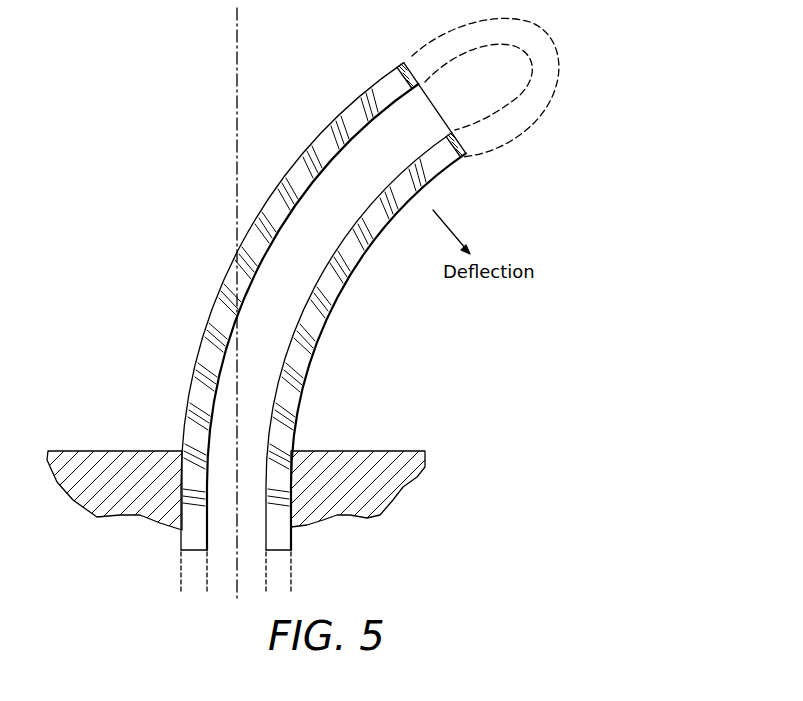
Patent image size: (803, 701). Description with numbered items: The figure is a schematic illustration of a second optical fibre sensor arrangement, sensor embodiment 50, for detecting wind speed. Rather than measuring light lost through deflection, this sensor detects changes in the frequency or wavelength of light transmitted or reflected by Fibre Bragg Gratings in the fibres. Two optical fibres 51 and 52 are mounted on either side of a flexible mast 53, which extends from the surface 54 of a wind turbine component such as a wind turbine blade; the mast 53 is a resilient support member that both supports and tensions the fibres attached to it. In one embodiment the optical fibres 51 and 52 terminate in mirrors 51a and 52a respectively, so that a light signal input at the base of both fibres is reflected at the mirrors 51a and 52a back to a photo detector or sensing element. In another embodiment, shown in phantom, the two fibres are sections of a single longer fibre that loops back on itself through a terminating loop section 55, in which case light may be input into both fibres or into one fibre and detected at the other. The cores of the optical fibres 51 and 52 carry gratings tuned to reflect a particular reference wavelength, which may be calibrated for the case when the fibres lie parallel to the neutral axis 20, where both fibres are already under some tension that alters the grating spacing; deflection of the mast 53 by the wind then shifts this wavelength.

The neutral axis 20 is at (233, 80).
The sensor embodiment 50 is at (353, 303).
The optical fibre 51 is at (222, 293).
The mirror 51a is at (415, 78).
The optical fibre 52 is at (342, 288).
The mirror 52a is at (465, 140).
The flexible mast 53 is at (394, 128).
The surface 54 is at (107, 455).
The terminating loop section 55 is at (547, 33).